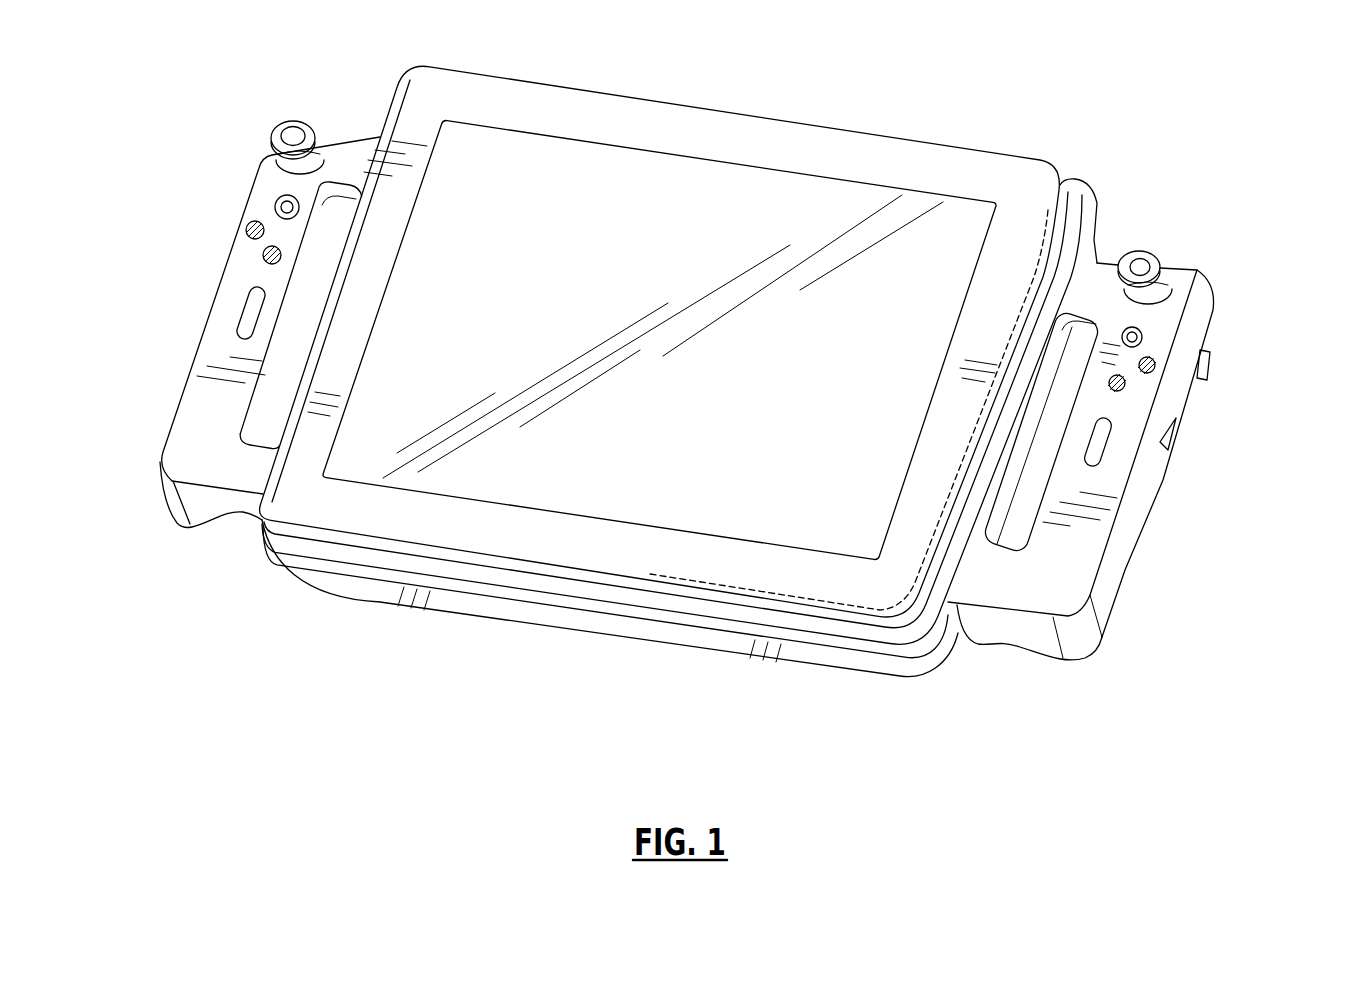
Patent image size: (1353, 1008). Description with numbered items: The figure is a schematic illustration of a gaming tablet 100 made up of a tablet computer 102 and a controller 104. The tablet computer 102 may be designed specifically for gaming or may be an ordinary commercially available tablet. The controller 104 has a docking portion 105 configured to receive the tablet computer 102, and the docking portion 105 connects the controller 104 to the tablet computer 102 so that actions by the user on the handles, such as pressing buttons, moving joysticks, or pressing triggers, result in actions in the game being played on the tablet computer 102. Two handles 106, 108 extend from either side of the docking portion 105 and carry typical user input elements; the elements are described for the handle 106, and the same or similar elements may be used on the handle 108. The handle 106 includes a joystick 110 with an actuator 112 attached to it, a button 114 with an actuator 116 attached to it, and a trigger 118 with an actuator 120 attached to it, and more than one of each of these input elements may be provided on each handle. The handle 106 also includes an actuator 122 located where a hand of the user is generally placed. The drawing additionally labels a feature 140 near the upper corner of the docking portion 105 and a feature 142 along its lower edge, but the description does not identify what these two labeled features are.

The gaming tablet 100 is at (788, 718).
The tablet computer 102 is at (940, 163).
The controller 104 is at (936, 668).
The docking portion 105 is at (500, 577).
The handle 106 is at (1113, 574).
The handle 108 is at (214, 352).
The joystick 110 is at (1172, 292).
The actuator 112 is at (1142, 264).
The button 114 is at (1152, 364).
The actuator 116 is at (1172, 428).
The trigger 118 is at (1145, 338).
The actuator 120 is at (1208, 362).
The actuator 122 is at (1169, 446).
The clip 140 is at (1097, 263).
The notch 142 is at (988, 617).